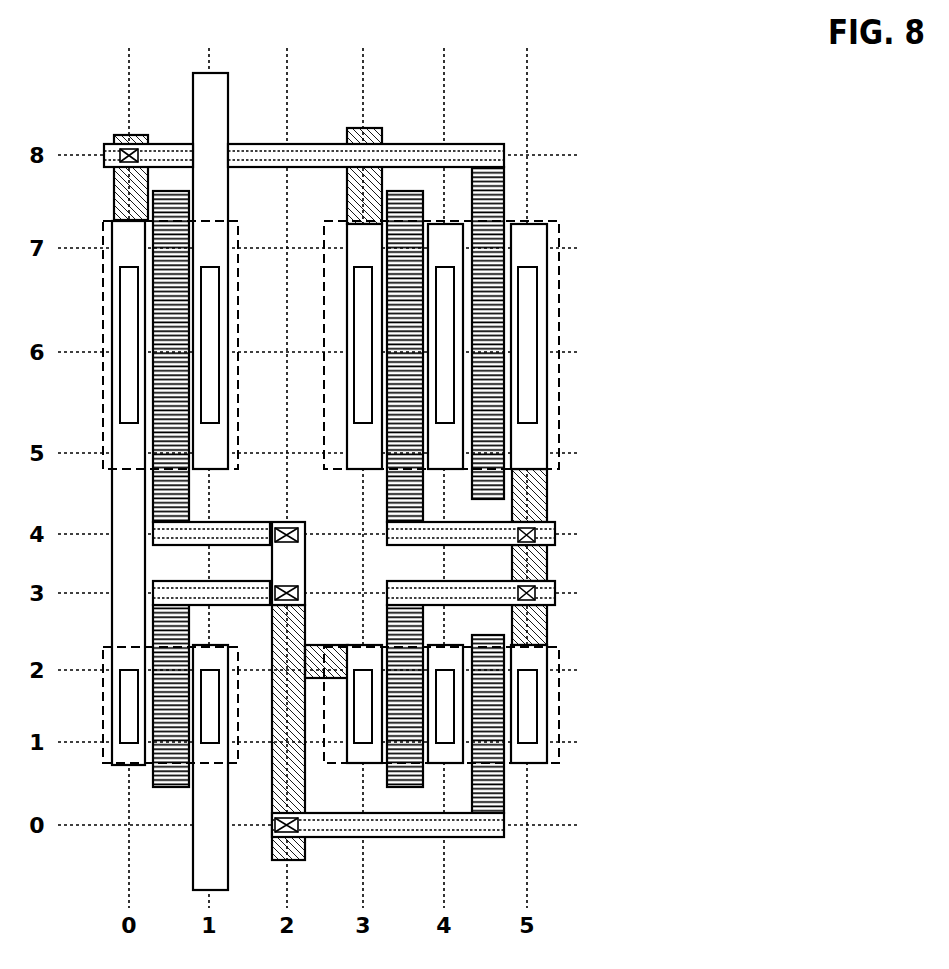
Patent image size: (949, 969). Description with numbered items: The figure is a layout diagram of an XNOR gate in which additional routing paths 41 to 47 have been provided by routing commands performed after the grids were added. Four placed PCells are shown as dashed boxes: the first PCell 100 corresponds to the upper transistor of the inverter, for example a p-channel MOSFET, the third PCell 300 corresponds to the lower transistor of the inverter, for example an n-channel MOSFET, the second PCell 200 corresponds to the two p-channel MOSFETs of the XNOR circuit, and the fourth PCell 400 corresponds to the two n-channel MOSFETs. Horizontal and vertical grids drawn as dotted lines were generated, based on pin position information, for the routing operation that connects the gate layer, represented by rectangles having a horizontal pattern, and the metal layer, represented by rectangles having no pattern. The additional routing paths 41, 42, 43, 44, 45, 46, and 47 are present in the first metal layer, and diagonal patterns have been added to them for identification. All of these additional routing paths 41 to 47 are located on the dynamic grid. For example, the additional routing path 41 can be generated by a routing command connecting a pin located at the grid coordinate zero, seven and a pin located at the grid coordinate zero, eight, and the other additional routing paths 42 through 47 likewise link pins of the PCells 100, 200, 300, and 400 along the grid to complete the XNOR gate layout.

The additional routing path 41 is at (113, 203).
The additional routing path 42 is at (352, 206).
The additional routing path 43 is at (275, 647).
The additional routing path 44 is at (315, 645).
The additional routing path 45 is at (543, 502).
The additional routing path 46 is at (543, 567).
The additional routing path 47 is at (543, 630).
The first PCell 100 is at (103, 307).
The second PCell 200 is at (560, 315).
The third PCell 300 is at (103, 726).
The fourth PCell 400 is at (560, 712).